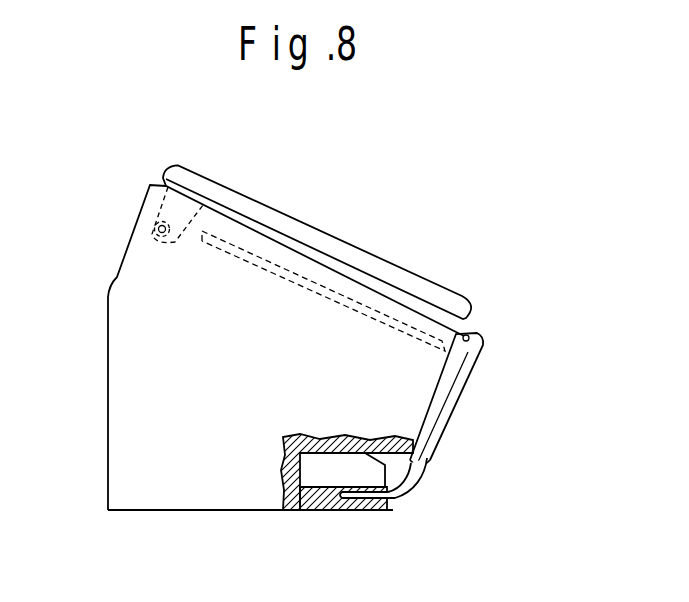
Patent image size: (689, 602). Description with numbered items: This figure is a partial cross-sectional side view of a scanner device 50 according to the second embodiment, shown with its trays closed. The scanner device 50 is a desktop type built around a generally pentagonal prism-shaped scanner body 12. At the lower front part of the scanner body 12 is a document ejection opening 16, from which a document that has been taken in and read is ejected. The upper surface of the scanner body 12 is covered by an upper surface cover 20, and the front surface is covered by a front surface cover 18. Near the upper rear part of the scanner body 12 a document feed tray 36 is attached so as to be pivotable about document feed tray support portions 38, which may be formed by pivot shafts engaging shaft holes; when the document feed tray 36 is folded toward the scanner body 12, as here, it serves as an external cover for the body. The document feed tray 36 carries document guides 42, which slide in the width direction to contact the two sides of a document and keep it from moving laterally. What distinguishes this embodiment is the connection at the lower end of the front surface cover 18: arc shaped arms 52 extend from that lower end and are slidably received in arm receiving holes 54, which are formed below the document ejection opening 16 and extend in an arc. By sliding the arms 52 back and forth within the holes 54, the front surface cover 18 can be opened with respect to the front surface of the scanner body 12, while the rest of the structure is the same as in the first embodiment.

The scanner device 50 is at (403, 178).
The scanner body 12 is at (137, 353).
The document feed tray 36 is at (367, 262).
The document guide 42 is at (267, 233).
The document feed tray support portion 38 is at (150, 215).
The upper surface cover 20 is at (478, 333).
The front surface cover 18 is at (460, 386).
The document ejection opening 16 is at (409, 464).
The arm receiving hole 54 is at (362, 500).
The arc shaped arm 52 is at (403, 492).